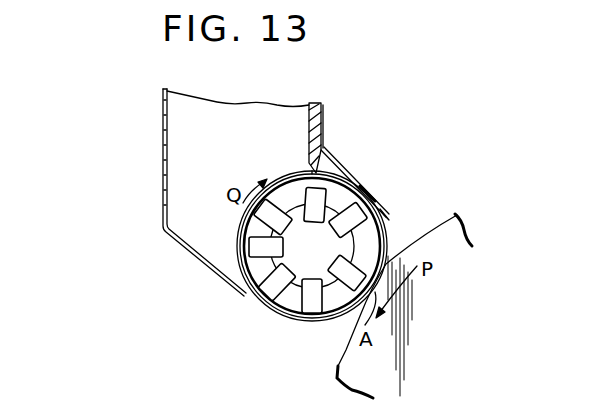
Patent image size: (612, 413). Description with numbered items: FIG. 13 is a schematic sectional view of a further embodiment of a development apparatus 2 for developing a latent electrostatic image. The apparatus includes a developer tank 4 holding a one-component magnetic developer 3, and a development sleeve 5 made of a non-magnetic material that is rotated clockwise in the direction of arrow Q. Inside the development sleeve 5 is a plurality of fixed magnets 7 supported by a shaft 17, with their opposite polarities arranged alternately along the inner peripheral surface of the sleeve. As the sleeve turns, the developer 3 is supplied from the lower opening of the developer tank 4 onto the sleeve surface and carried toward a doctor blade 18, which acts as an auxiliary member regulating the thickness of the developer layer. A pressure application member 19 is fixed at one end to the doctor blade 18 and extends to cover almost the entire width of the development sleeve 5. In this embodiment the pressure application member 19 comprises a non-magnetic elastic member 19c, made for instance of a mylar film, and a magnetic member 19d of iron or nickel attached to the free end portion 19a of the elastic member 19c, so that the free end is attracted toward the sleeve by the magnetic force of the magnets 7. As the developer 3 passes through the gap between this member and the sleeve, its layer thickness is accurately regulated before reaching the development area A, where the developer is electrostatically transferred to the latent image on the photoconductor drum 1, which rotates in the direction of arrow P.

The photoconductor drum 1 is at (342, 363).
The development apparatus 2 is at (158, 108).
The magnetic developer 3 is at (221, 146).
The developer tank 4 is at (163, 214).
The development sleeve 5 is at (259, 298).
The magnets 7 is at (268, 228).
The shaft 17 is at (300, 317).
The doctor blade 18 is at (309, 124).
The pressure application member 19 is at (369, 176).
The free end portion 19a is at (383, 219).
The non-magnetic elastic member 19c is at (337, 166).
The magnetic member 19d is at (374, 197).